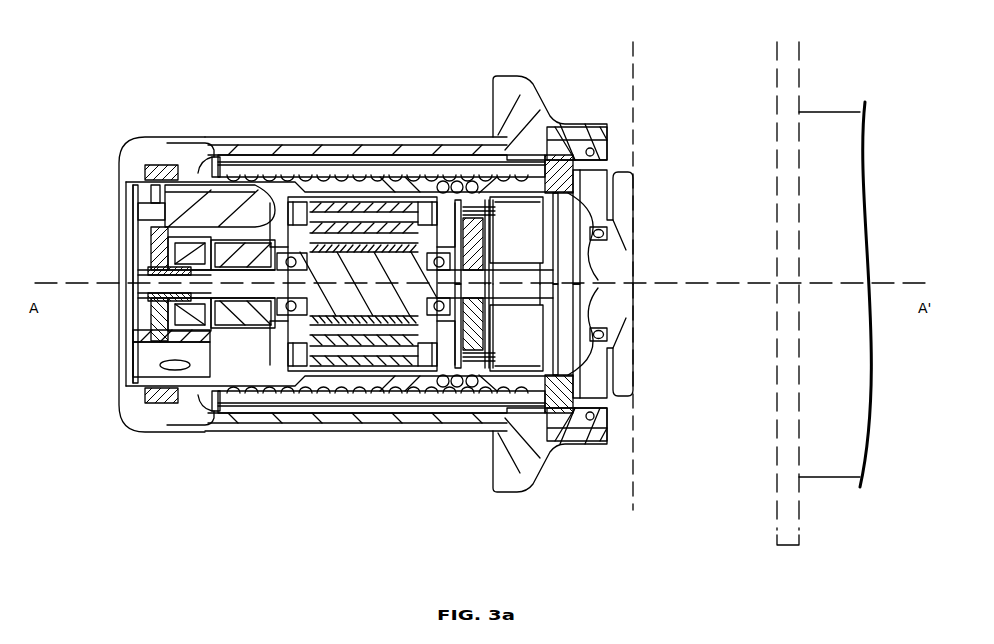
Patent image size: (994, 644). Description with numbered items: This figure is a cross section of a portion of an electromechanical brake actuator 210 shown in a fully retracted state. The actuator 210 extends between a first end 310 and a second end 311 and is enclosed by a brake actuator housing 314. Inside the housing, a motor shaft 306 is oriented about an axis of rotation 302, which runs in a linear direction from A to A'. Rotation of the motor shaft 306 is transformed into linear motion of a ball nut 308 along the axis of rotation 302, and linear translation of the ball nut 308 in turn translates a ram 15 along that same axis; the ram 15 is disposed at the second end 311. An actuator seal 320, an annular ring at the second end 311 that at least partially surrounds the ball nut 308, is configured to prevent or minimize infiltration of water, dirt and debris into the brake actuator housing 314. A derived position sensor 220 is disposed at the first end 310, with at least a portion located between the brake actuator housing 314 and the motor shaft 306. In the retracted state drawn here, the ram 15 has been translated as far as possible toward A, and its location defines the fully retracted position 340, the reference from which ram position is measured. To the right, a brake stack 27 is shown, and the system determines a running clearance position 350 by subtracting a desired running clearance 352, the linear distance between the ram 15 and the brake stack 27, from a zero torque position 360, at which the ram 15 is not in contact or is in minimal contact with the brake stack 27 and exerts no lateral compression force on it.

The electromechanical brake actuator 210 is at (337, 273).
The brake actuator housing 314 is at (206, 138).
The motor shaft 306 is at (338, 272).
The actuator seal 320 is at (553, 150).
The fully retracted position 340 is at (634, 73).
The brake stack 27 is at (822, 130).
The ram 15 is at (626, 250).
The axis of rotation 302 is at (38, 283).
The derived position sensor 220 is at (133, 250).
The first end 310 is at (137, 465).
The ball nut 308 is at (418, 390).
The second end 311 is at (612, 490).
The running clearance position 350 is at (777, 500).
The zero torque position 360 is at (800, 500).
The desired running clearance 352 is at (788, 548).